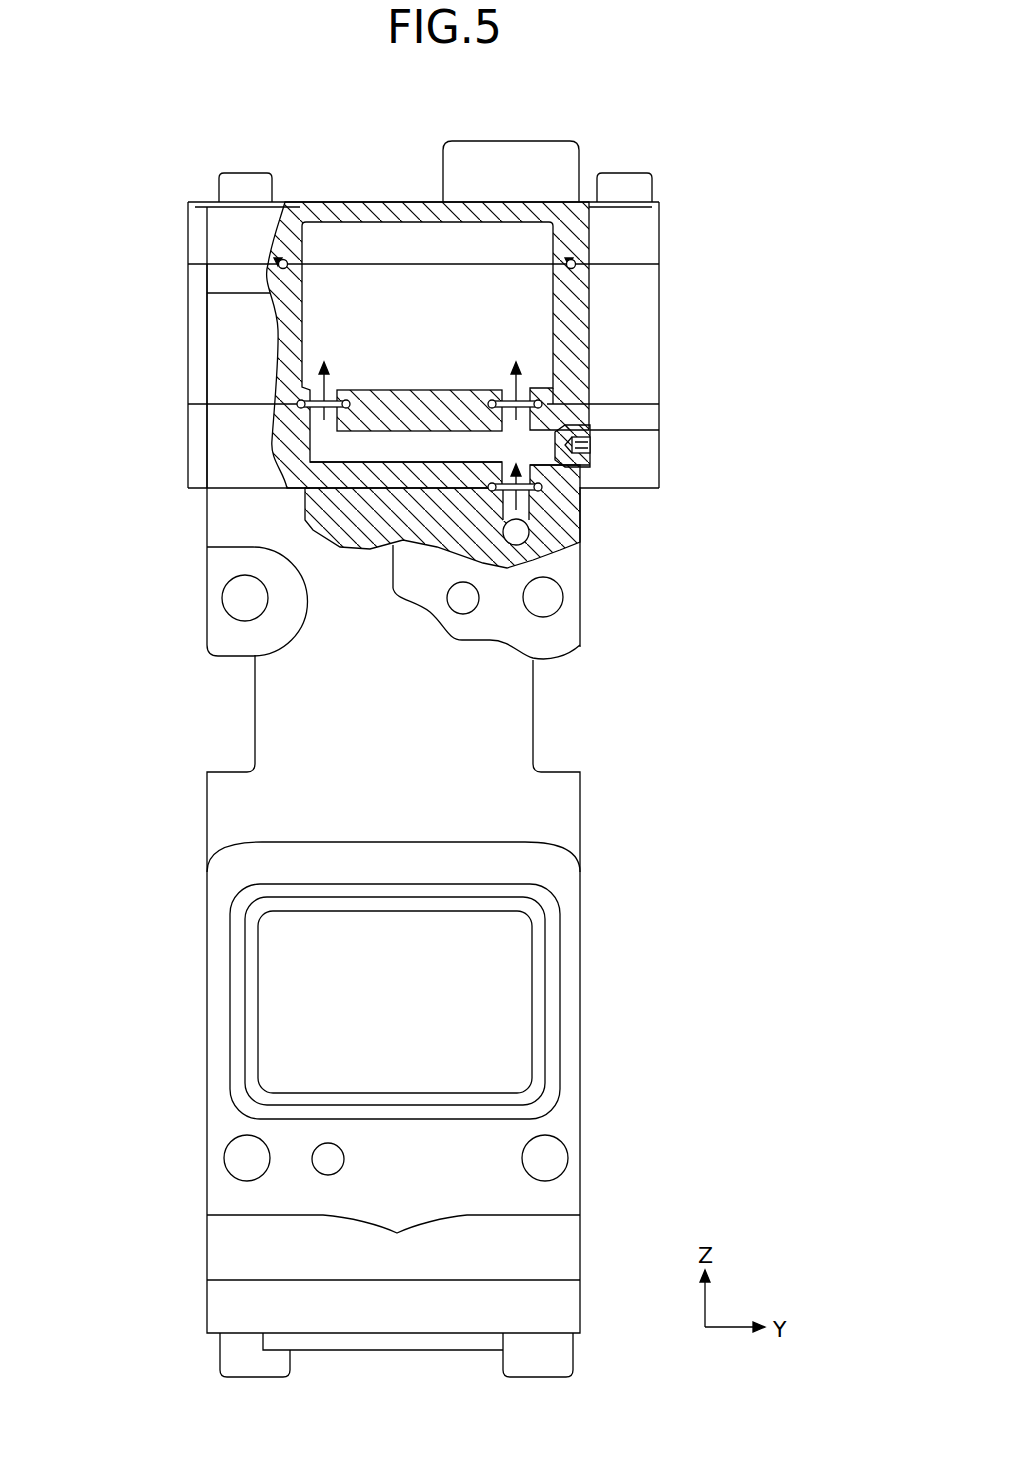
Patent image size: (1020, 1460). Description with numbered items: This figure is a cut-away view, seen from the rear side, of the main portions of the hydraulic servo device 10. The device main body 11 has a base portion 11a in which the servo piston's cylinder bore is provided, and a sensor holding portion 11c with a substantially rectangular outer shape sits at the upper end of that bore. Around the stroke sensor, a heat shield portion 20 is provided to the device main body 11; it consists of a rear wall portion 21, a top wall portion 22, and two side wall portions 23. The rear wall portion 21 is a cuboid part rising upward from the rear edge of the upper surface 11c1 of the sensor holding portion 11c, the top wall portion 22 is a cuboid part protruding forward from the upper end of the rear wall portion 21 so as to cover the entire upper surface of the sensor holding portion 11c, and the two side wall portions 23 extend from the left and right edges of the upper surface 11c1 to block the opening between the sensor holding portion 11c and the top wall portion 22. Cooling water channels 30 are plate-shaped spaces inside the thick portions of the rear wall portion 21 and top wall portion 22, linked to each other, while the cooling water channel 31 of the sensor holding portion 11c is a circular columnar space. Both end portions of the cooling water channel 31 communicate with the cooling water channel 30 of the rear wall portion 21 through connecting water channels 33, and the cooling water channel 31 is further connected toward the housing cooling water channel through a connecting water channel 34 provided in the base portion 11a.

The hydraulic servo device 10 is at (693, 530).
The device main body 11 is at (208, 697).
The base portion 11a is at (558, 503).
The sensor holding portion 11c is at (228, 467).
The upper surface 11c1 is at (233, 399).
The heat shield portion 20 is at (204, 148).
The rear wall portion 21 is at (578, 326).
The top wall portion 22 is at (250, 227).
The side wall portions 23 is at (198, 332).
The cooling water channel 30 is at (343, 290).
The cooling water channel 31 is at (374, 447).
The connecting water channels 33 is at (320, 433).
The connecting water channel 34 is at (522, 546).